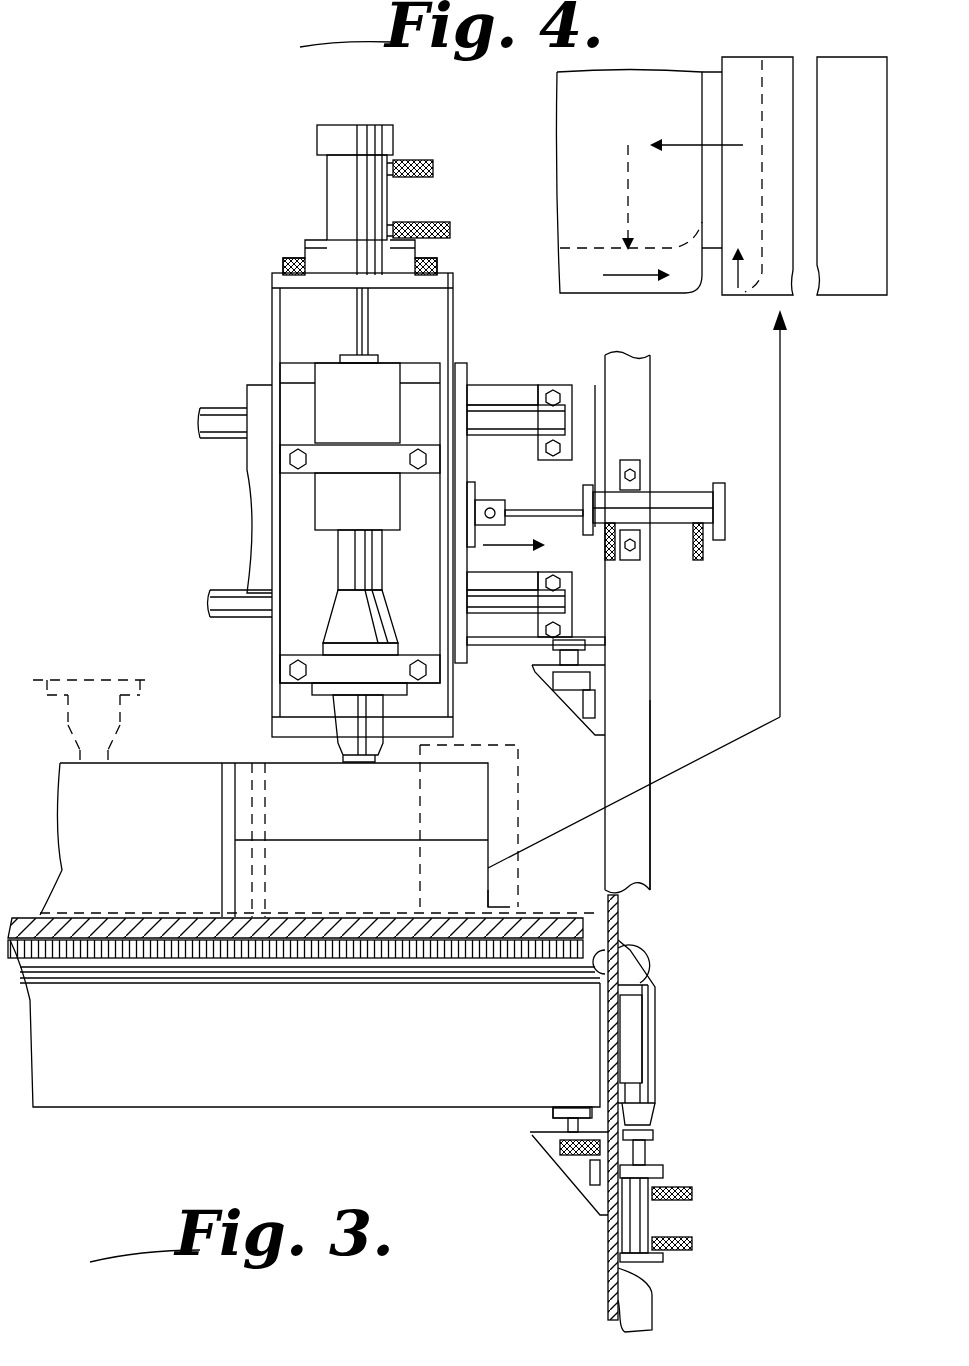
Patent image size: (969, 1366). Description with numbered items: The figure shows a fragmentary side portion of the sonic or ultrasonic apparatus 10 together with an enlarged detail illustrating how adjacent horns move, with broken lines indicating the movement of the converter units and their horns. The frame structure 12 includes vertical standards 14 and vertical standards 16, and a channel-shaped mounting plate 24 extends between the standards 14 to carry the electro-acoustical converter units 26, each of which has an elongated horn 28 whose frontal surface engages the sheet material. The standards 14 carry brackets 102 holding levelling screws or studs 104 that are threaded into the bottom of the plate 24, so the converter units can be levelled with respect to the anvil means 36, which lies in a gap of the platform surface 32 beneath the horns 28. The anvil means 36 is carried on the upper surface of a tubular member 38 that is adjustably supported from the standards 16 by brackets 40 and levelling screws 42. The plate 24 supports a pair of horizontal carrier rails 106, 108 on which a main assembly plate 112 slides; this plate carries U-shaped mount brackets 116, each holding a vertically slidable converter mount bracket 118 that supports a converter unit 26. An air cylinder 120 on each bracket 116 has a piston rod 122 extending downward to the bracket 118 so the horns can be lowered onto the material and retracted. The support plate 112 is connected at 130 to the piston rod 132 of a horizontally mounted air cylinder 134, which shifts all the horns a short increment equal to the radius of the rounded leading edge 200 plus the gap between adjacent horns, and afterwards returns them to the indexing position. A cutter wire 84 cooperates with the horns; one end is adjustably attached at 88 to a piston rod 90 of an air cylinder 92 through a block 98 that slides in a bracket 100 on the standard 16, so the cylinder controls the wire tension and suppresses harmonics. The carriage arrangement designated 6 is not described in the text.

In FIG. 3, the carriage assembly 6 is at (710, 1092).
In FIG. 3, the sonic or ultrasonic apparatus 10 is at (252, 252).
In FIG. 3, the frame structure 12 is at (665, 655).
In FIG. 3, the vertical standards 14 is at (650, 868).
In FIG. 3, the vertical standards 16 is at (650, 398).
In FIG. 3, the mounting plate 24 is at (510, 382).
In FIG. 3, the electro-acoustical converter units 26 is at (386, 535).
In FIG. 4, the horn 28 is at (622, 296).
In FIG. 3, the horn 28 is at (180, 752).
In FIG. 3, the platform surface 32 is at (375, 965).
In FIG. 3, the anvil means 36 is at (232, 962).
In FIG. 3, the tubular member 38 is at (340, 1108).
In FIG. 3, the brackets 40 is at (568, 1172).
In FIG. 3, the levelling screws 42 is at (550, 1124).
In FIG. 3, the cutter wire 84 is at (645, 966).
In FIG. 3, the adjustable attachment 88 is at (668, 1011).
In FIG. 3, the piston rod 90 is at (645, 1153).
In FIG. 3, the pneumatic or air cylinder 92 is at (655, 1220).
In FIG. 3, the block 98 is at (655, 1085).
In FIG. 3, the bracket 100 is at (645, 1050).
In FIG. 3, the brackets 102 is at (577, 742).
In FIG. 3, the levelling screws or studs 104 is at (549, 648).
In FIG. 3, the carrier rail 106 is at (497, 604).
In FIG. 3, the carrier rail 108 is at (531, 440).
In FIG. 3, the main assembly plate 112 is at (470, 368).
In FIG. 3, the U-shaped air cylinder and horn assembly mount bracket 116 is at (455, 303).
In FIG. 3, the converter mount bracket 118 is at (305, 363).
In FIG. 3, the pneumatic or air cylinders 120 is at (393, 184).
In FIG. 3, the piston rods 122 is at (370, 318).
In FIG. 3, the connection 130 is at (488, 474).
In FIG. 3, the piston rod 132 is at (523, 520).
In FIG. 3, the pneumatic or air cylinder 134 is at (690, 492).
In FIG. 4, the leading edge 200 is at (705, 298).
In FIG. 3, the leading edge 200 is at (527, 908).